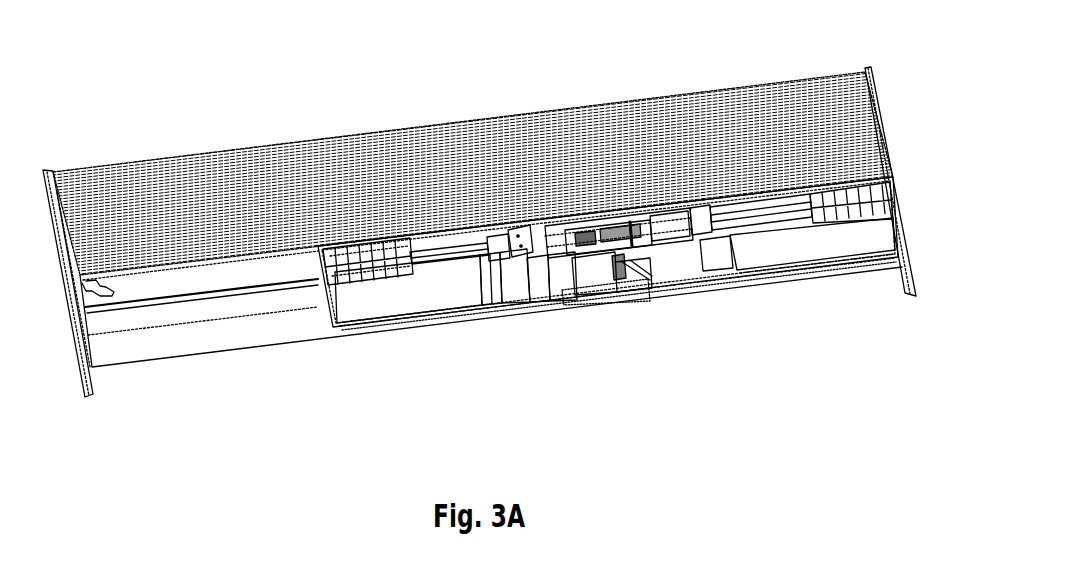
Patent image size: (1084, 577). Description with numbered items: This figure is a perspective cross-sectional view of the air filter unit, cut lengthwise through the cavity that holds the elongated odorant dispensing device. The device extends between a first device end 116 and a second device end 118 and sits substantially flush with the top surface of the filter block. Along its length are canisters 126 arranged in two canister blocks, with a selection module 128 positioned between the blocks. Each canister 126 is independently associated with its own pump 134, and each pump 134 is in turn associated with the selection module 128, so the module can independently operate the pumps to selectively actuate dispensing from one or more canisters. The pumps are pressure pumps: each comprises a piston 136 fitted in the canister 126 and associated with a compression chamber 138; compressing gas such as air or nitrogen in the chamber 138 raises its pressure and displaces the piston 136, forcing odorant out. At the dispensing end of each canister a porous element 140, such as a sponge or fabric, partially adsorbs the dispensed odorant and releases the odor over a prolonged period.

The first device end 116 is at (330, 325).
The second device end 118 is at (903, 268).
The canister 126 is at (747, 207).
The selection module 128 is at (608, 198).
The pump 134 is at (596, 275).
The piston 136 is at (488, 287).
The compression chamber 138 is at (505, 287).
The porous element 140 is at (385, 322).